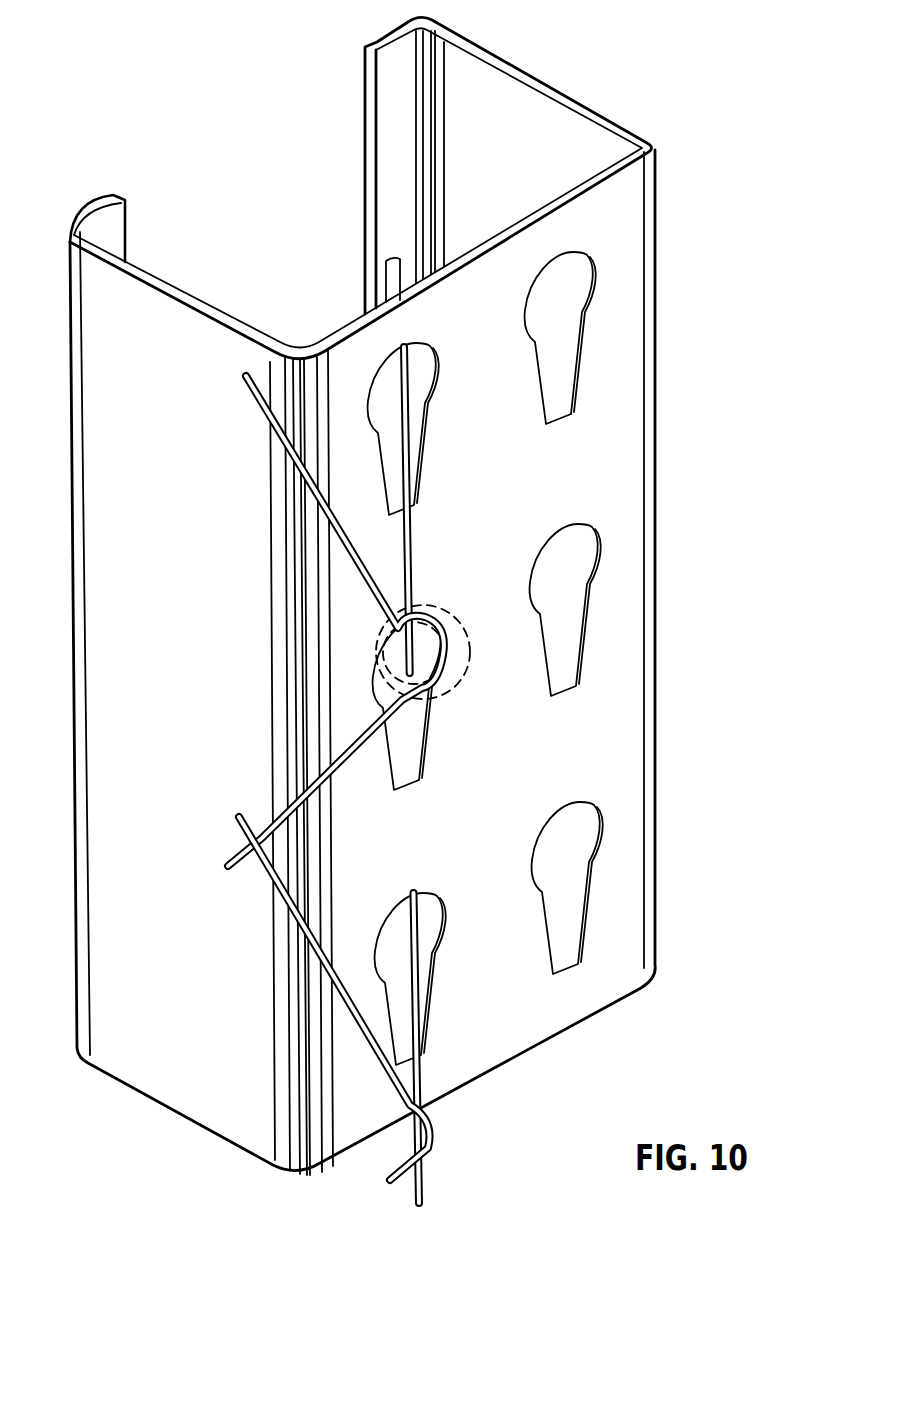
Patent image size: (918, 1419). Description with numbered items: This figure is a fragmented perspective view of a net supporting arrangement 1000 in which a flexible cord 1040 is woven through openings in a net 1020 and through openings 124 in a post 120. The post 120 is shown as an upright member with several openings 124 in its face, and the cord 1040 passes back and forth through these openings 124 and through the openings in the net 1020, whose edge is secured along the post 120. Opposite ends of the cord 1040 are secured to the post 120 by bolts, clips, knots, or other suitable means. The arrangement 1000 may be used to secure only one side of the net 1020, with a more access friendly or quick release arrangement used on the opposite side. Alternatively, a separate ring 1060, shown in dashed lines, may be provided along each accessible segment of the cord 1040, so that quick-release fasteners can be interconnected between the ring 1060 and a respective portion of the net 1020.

The net supporting arrangement 1000 is at (268, 94).
The post 120 is at (577, 91).
The openings 124 is at (415, 362).
The flexible cord 1040 is at (413, 1088).
The ring 1060 is at (458, 672).
The net 1020 is at (385, 1172).